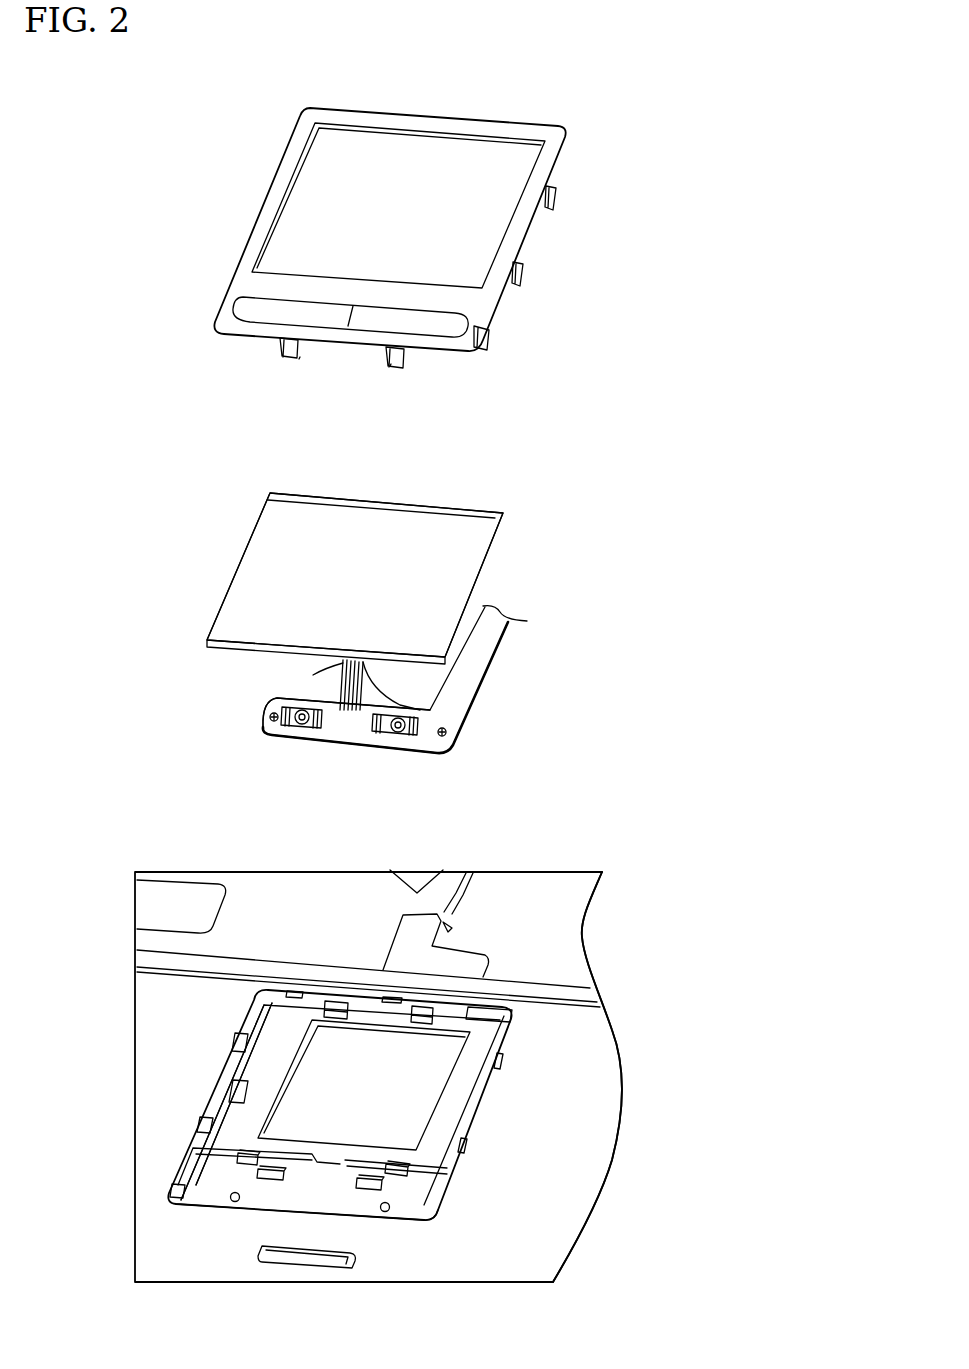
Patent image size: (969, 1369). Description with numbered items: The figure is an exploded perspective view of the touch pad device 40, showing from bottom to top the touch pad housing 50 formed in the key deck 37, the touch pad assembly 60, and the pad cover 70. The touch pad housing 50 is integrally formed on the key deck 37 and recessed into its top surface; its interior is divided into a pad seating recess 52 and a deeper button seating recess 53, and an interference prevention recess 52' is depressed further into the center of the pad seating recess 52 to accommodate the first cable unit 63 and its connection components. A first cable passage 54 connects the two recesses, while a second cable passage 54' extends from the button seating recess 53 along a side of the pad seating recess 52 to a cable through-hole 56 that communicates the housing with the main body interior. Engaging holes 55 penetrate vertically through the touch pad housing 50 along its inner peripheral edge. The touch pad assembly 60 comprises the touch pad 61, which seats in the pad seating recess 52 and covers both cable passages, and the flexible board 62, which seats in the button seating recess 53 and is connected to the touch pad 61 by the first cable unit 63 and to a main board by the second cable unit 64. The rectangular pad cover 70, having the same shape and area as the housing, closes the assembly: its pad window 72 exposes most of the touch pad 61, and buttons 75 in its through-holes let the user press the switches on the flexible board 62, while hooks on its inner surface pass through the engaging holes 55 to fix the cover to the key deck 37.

The key deck 37 is at (615, 1150).
The touch pad device 40 is at (618, 948).
The touch pad housing 50 is at (405, 1104).
The pad seating recess 52 is at (231, 1101).
The interference prevention recess 52' is at (364, 1085).
The button seating recess 53 is at (319, 1203).
The first cable passage 54 is at (333, 1212).
The second cable passage 54' is at (469, 1181).
The engaging holes 55 is at (173, 1183).
The cable through-hole 56 is at (495, 1015).
The touch pad assembly 60 is at (527, 548).
The touch pad 61 is at (460, 521).
The flexible board 62 is at (344, 745).
The first cable unit 63 is at (342, 668).
The second cable unit 64 is at (480, 672).
The pad cover 70 is at (488, 295).
The pad window 72 is at (419, 216).
The buttons 75 is at (463, 345).